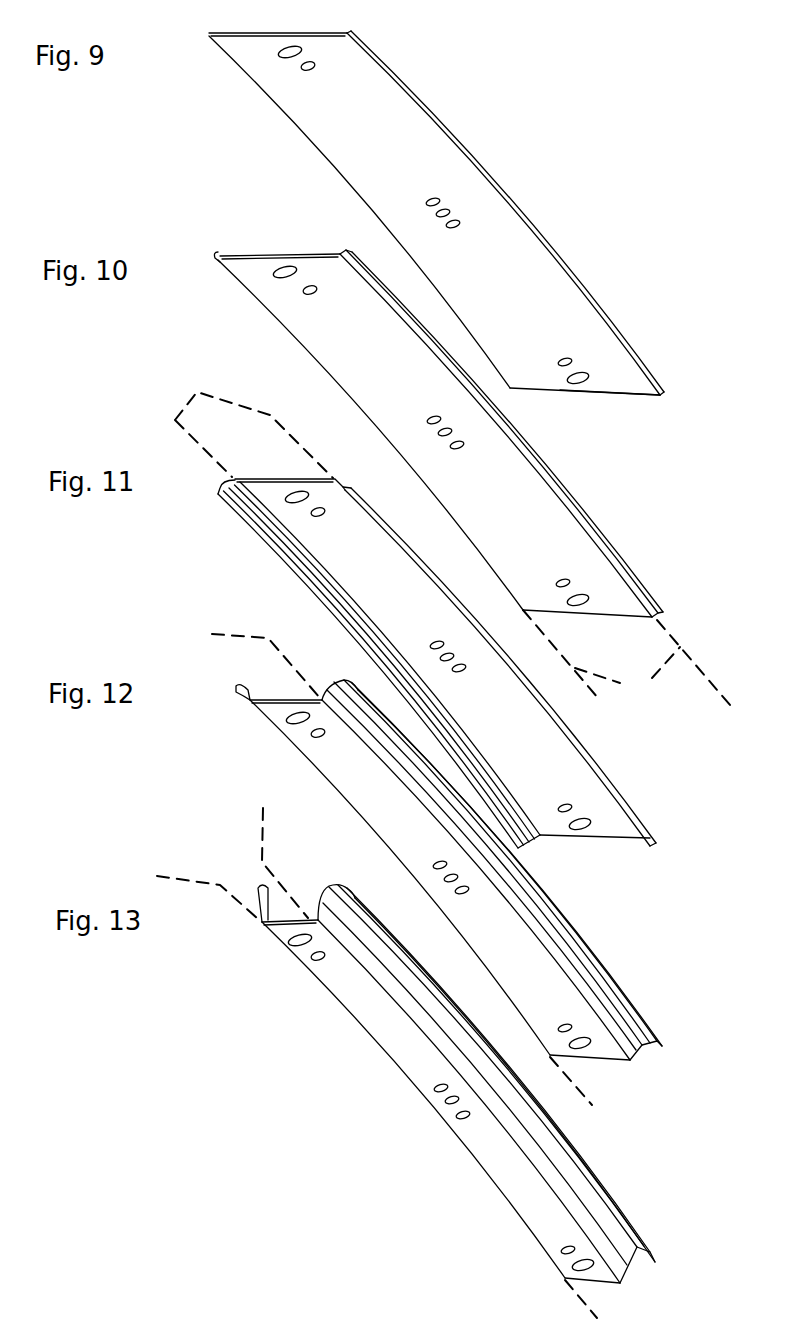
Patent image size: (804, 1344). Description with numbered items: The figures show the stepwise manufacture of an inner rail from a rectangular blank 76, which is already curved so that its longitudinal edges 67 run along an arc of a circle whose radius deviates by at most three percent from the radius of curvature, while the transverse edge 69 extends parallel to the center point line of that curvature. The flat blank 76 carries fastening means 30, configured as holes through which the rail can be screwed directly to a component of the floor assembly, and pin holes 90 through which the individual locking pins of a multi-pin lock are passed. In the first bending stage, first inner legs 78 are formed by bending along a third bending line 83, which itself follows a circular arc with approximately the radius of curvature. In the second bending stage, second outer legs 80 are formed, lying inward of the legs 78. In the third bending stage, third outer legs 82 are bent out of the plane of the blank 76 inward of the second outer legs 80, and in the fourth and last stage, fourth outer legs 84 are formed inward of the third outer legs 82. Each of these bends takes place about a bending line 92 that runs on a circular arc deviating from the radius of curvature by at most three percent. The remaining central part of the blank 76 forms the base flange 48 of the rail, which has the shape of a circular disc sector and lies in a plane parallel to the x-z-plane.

In FIG. 9, the blank 76 is at (363, 98).
In FIG. 9, the longitudinal edge 67 is at (518, 200).
In FIG. 9, the pin holes 90 is at (452, 226).
In FIG. 13, the pin holes 90 is at (465, 1120).
In FIG. 9, the fastening means 30 is at (572, 383).
In FIG. 13, the fastening means 30 is at (578, 1250).
In FIG. 9, the transverse edge 69 is at (588, 394).
In FIG. 10, the first inner legs 78 is at (645, 590).
In FIG. 11, the first inner legs 78 is at (655, 846).
In FIG. 12, the first inner legs 78 is at (657, 1040).
In FIG. 10, the third bending line 83 is at (626, 659).
In FIG. 11, the second outer legs 80 is at (236, 490).
In FIG. 11, the bending line 92 is at (254, 421).
In FIG. 12, the bending line 92 is at (243, 661).
In FIG. 13, the bending line 92 is at (212, 850).
In FIG. 12, the third outer legs 82 is at (638, 1052).
In FIG. 13, the fourth outer legs 84 is at (313, 915).
In FIG. 13, the base flange 48 is at (385, 1024).